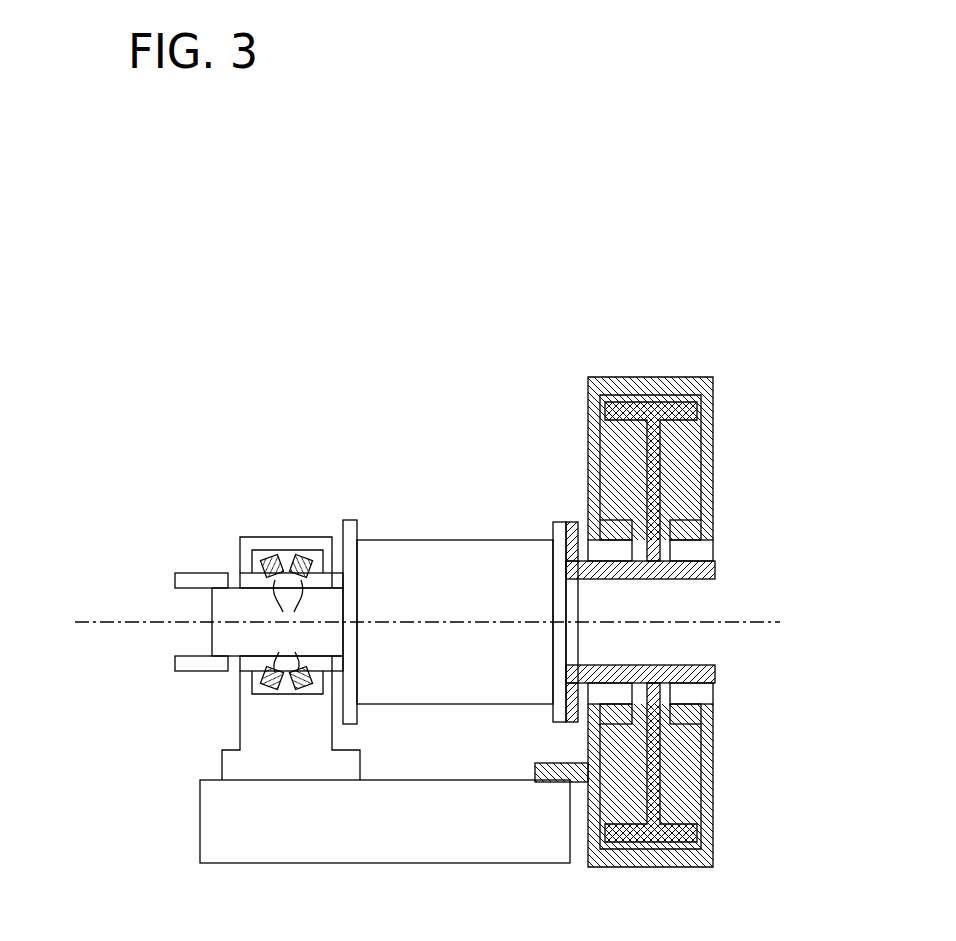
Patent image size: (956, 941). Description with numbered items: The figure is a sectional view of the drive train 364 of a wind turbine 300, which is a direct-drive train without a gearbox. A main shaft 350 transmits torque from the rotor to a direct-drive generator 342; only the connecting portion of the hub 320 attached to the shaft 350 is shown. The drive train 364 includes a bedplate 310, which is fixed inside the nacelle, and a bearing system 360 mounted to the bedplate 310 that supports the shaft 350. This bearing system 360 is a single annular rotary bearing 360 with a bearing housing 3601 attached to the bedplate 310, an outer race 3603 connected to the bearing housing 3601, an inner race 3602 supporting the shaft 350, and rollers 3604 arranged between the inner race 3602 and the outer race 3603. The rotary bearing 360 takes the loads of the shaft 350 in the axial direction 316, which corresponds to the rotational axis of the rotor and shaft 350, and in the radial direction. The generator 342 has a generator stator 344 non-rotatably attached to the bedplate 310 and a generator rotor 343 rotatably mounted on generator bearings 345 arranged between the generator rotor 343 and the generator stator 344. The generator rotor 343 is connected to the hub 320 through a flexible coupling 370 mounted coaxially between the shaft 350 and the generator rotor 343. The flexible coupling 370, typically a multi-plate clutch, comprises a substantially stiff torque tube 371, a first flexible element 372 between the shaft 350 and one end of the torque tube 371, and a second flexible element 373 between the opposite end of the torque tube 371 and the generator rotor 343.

The wind turbine 300 is at (382, 255).
The bedplate 310 is at (268, 847).
The axial direction 316 is at (95, 613).
The hub 320 is at (193, 580).
The direct-drive generator 342 is at (657, 355).
The generator rotor 343 is at (712, 573).
The generator stator 344 is at (708, 513).
The generator bearings 345 is at (703, 552).
The main shaft 350 is at (328, 627).
The rotary bearing 360 is at (260, 492).
The bearing housing 3601 is at (305, 543).
The inner race 3602 is at (328, 582).
The outer race 3603 is at (263, 557).
The rollers 3604 is at (283, 626).
The drive train 364 is at (336, 358).
The flexible coupling 370 is at (460, 413).
The torque tube 371 is at (483, 540).
The first flexible element 372 is at (357, 518).
The second flexible element 373 is at (560, 530).